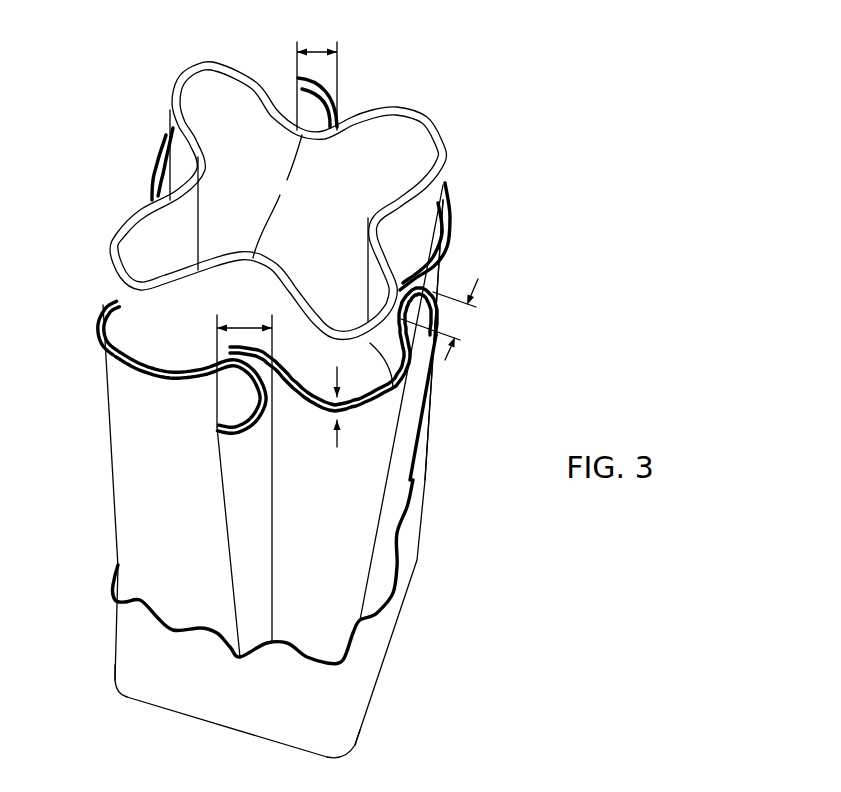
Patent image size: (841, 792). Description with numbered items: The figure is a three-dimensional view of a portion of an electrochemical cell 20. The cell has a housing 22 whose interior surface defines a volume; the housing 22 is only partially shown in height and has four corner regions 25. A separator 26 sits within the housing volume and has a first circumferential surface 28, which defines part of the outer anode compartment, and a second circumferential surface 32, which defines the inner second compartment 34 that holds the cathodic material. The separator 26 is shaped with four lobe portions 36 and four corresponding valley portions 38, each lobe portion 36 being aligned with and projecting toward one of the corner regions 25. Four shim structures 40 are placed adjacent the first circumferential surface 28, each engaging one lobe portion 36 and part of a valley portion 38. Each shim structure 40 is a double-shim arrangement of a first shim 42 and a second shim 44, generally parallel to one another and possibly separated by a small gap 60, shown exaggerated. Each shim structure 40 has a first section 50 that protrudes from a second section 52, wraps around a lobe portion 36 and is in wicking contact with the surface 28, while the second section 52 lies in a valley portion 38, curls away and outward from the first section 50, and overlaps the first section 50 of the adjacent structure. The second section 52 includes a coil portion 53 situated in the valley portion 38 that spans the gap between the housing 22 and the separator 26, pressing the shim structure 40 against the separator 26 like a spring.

The electrochemical cell 20 is at (452, 45).
The housing 22 is at (217, 710).
The corner regions 25 is at (125, 640).
The separator 26 is at (135, 318).
The first circumferential surface 28 is at (296, 366).
The second circumferential surface 32 is at (397, 139).
The second compartment 34 is at (296, 238).
The lobe portions 36 is at (208, 61).
The valley portions 38 is at (376, 208).
The shim structures 40 is at (143, 517).
The first shim 42 is at (175, 367).
The second shim 44 is at (180, 383).
The first section 50 is at (125, 407).
The second section 52 is at (323, 60).
The coil portion 53 is at (238, 433).
The gap 60 is at (337, 444).